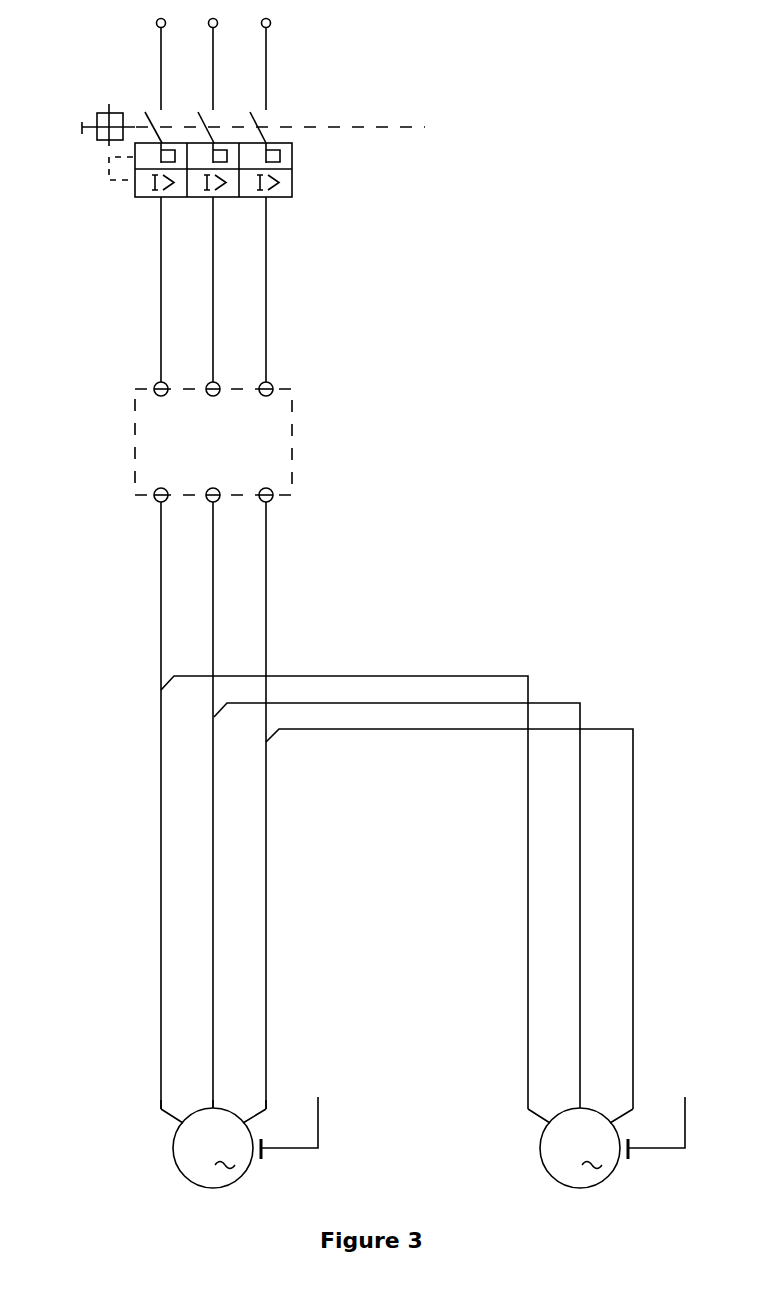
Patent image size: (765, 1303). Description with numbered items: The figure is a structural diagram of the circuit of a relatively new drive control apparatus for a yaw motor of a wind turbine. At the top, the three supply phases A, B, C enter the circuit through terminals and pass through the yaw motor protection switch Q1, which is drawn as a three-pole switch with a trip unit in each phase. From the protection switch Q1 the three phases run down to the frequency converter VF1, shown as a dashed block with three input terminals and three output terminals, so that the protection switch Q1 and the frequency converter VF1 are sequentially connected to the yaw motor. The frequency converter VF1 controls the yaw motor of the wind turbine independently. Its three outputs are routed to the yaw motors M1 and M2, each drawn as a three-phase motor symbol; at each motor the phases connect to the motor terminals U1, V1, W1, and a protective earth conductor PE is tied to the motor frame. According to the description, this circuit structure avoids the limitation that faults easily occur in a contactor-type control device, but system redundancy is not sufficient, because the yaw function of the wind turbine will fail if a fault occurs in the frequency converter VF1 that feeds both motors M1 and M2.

The supply phase A is at (110, 40).
The supply phase B is at (162, 40).
The supply phase C is at (214, 40).
The yaw motor protection switch Q1 is at (28, 127).
The frequency converter VF1 is at (73, 408).
The first three-phase motor M1 is at (93, 1148).
The second three-phase motor M2 is at (462, 1148).
The motor terminal U1 is at (174, 1100).
The motor terminal V1 is at (226, 1100).
The motor terminal W1 is at (283, 1100).
The protective earth terminal PE is at (302, 1124).